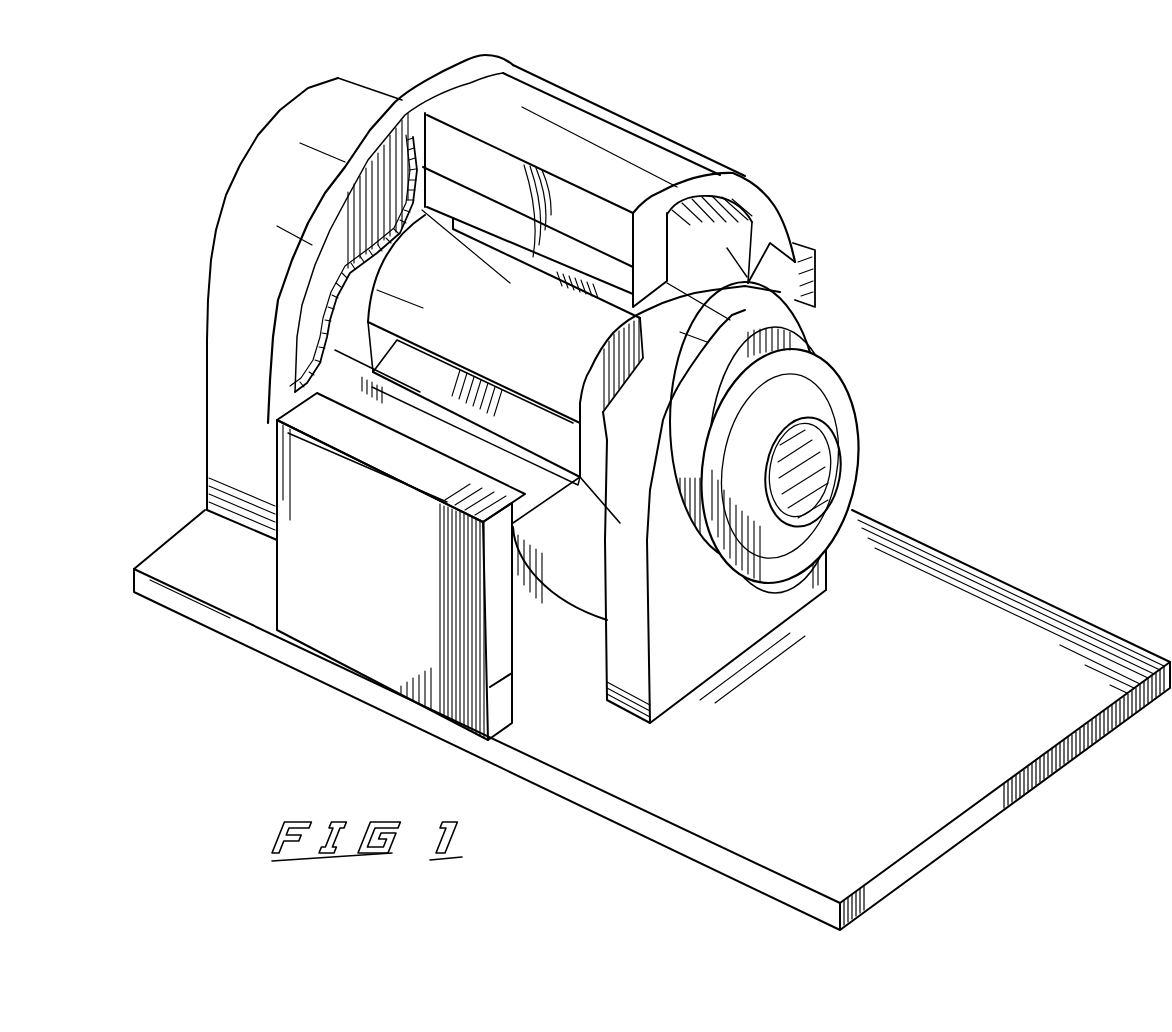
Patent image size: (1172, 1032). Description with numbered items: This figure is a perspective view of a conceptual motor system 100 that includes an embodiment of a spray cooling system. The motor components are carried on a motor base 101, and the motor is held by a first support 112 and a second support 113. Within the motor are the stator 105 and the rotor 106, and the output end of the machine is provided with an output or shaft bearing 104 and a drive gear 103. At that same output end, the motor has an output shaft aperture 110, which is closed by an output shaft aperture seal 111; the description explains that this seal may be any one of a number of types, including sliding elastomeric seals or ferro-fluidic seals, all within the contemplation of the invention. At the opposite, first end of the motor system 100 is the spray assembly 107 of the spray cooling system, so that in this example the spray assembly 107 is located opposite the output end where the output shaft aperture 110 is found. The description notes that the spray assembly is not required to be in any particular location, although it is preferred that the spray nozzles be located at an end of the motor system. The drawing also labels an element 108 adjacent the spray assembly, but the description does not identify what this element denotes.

The motor system 100 is at (652, 477).
The motor base 101 is at (873, 801).
The drive gear 103 is at (856, 404).
The output or shaft bearing 104 is at (815, 312).
The stator 105 is at (600, 135).
The rotor 106 is at (516, 336).
The spray assembly 107 is at (462, 63).
The end frame opening 108 is at (330, 328).
The output shaft aperture 110 is at (812, 480).
The output shaft aperture seal 111 is at (827, 561).
The first support 112 is at (712, 618).
The second support 113 is at (262, 456).